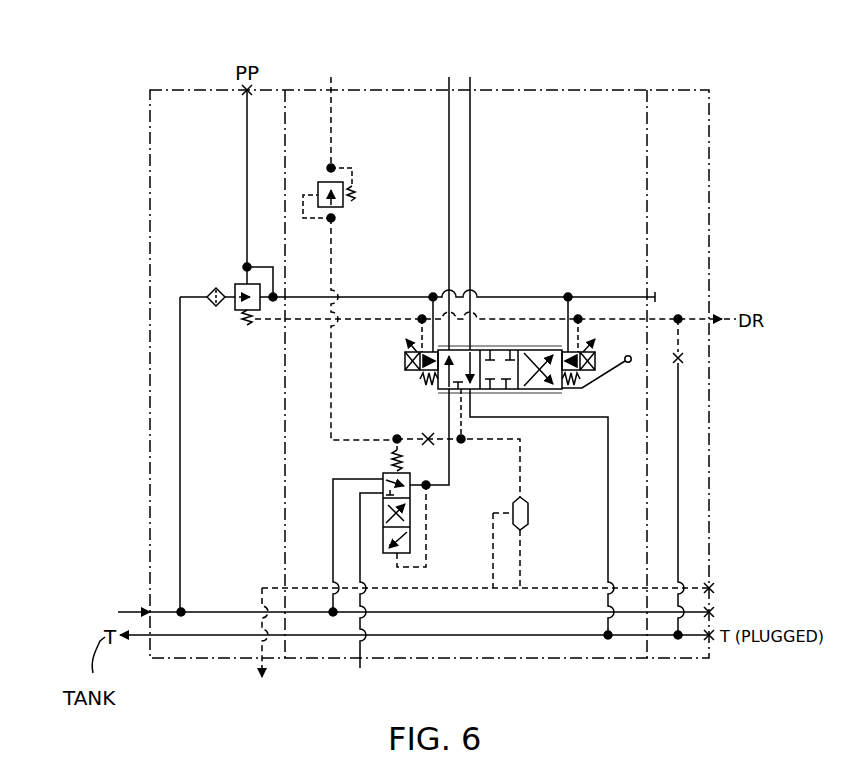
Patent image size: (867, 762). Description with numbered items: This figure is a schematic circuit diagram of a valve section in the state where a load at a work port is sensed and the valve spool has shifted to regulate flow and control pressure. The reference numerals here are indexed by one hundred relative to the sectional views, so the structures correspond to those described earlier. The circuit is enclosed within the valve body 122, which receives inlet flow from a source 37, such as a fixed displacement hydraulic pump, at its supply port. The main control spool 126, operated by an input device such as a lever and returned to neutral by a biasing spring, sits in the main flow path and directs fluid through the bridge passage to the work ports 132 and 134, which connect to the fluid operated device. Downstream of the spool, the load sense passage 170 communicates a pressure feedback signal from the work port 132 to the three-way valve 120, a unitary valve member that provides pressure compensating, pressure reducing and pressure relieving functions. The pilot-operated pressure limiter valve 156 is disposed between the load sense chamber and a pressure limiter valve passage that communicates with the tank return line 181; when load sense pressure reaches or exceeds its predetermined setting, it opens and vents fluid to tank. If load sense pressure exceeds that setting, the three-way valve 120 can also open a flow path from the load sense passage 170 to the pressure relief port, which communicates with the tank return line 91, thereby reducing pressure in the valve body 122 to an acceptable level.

The valve body 122 is at (108, 198).
The source 37 is at (112, 598).
The load sense passage 170 is at (256, 703).
The tank return line 91 is at (360, 660).
The tank return line 181 is at (331, 90).
The pilot-operated pressure limiter valve 156 is at (351, 226).
The work port 132 is at (443, 63).
The work port 134 is at (478, 63).
The main control spool 126 is at (417, 397).
The three-way valve 120 is at (441, 525).